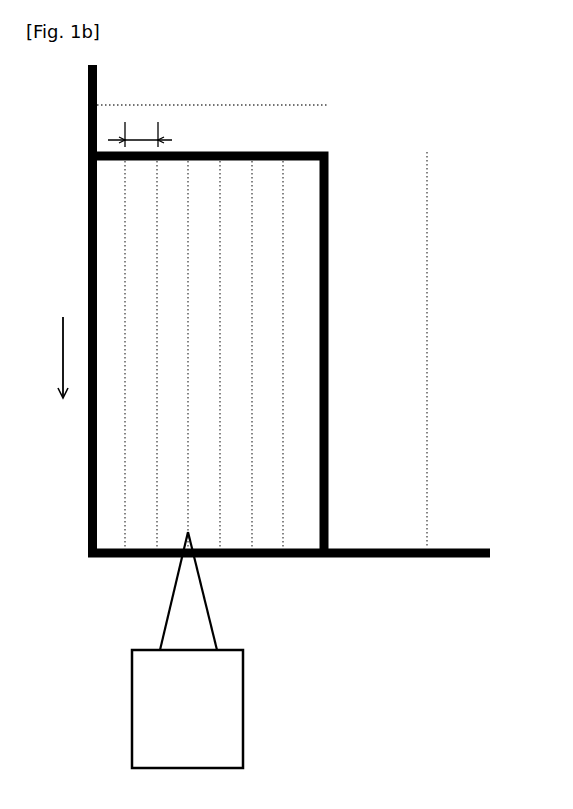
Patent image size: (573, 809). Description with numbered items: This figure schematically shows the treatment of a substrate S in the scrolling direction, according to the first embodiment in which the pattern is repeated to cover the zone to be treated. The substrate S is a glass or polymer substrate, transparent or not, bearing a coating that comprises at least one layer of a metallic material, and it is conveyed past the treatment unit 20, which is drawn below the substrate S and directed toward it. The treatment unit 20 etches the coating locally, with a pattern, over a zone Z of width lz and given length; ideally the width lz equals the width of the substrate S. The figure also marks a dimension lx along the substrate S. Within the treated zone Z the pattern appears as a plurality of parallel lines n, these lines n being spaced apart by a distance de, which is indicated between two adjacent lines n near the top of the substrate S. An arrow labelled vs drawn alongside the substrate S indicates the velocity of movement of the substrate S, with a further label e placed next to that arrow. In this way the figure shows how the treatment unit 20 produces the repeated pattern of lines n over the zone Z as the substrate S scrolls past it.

The treatment unit 20 is at (187, 650).
The substrate s is at (312, 175).
The lines n is at (292, 276).
The zone z is at (332, 398).
The length in x lx is at (212, 95).
The width of zone lz is at (439, 350).
The spacing distance between lines de is at (140, 134).
The substrate velocity vs is at (63, 345).
The direction e is at (40, 348).